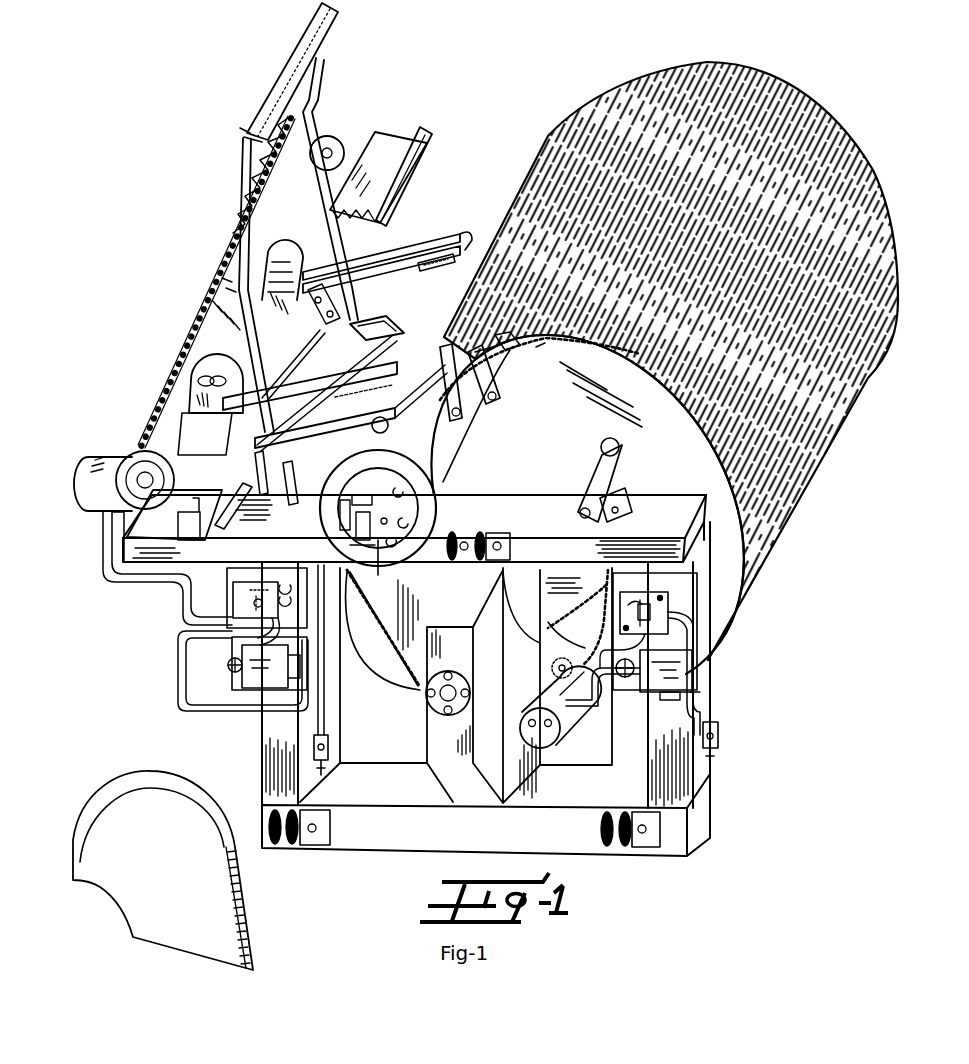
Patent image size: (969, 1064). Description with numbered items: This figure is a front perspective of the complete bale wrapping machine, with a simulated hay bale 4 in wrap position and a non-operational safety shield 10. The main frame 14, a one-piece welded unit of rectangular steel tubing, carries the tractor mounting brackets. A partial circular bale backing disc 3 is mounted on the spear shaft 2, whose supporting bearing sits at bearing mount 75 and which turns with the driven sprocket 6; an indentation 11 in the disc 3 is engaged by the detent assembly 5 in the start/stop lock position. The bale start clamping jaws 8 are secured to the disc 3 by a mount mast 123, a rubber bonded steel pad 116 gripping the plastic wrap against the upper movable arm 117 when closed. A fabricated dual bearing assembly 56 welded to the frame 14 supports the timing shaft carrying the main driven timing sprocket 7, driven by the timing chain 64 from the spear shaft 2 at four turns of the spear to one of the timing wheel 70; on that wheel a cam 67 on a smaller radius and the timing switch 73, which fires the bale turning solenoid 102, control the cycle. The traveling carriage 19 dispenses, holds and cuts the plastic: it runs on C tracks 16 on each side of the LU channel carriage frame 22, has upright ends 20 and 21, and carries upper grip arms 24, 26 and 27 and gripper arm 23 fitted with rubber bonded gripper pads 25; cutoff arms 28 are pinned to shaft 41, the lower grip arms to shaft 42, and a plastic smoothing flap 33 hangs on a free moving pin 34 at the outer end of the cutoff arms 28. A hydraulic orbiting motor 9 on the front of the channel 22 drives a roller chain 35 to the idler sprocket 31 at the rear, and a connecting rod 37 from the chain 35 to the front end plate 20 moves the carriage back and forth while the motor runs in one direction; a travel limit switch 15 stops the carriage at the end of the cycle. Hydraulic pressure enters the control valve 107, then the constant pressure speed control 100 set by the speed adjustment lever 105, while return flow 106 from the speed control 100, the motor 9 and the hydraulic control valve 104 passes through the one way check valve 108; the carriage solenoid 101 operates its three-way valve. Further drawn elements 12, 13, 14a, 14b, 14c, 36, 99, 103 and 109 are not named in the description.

The spear shaft 2 is at (425, 700).
The bale backing plate disc 3 is at (140, 456).
The hay bale 4 is at (815, 479).
The detent assembly 5 is at (688, 444).
The driven sprocket 6 is at (562, 635).
The main driven timing sprocket 7 is at (502, 335).
The bale start clamping jaws 8 is at (321, 456).
The hydraulic orbiting motor 9 is at (107, 452).
The safety shield 10 is at (160, 812).
The indentation 11 is at (662, 445).
The support post 12 is at (302, 483).
The hydraulic motor 13 is at (548, 735).
The main frame 14 is at (728, 774).
The frame chain member 14a is at (560, 661).
The frame roller 14b is at (314, 836).
The frame roller 14c is at (650, 840).
The travel limit switch 15 is at (186, 512).
The C track 16 is at (421, 160).
The traveling carriage 19 is at (200, 470).
The front carriage end plate 20 is at (182, 416).
The upright end 21 is at (316, 342).
The carriage assembly frame 22 is at (393, 150).
The gripper arm 23 is at (351, 406).
The upper plastic film grip arm 24 is at (368, 395).
The gripper pads 25 is at (438, 272).
The upper plastic film grip arm 26 is at (395, 277).
The upper plastic film grip arm 27 is at (400, 256).
The cutoff arms 28 is at (317, 87).
The idler roller chain sprocket 31 is at (334, 146).
The plastic smoothing flap 33 is at (306, 44).
The free moving pin 34 is at (247, 140).
The roller chain 35 is at (226, 286).
The drum 36 is at (233, 350).
The connecting rod 37 is at (172, 441).
The shaft 41 is at (337, 305).
The shaft 42 is at (305, 352).
The dual bearing assembly 56 is at (510, 322).
The timing chain 64 is at (412, 688).
The cam 67 is at (381, 631).
The timing wheel 70 is at (543, 352).
The timing switch 73 is at (300, 525).
The bearing mount 75 is at (436, 708).
The control valve 99 is at (233, 603).
The constant pressure speed control 100 is at (668, 615).
The solenoid 101 is at (232, 668).
The solenoid 102 is at (634, 696).
The valve knob 103 is at (232, 655).
The hydraulic control valve 104 is at (694, 663).
The speed adjustment lever 105 is at (672, 602).
The return flow line 106 is at (700, 678).
The control valve 107 is at (245, 690).
The one way check valve 108 is at (730, 744).
The pedal 109 is at (302, 744).
The rubber bonded steel pad 116 is at (377, 321).
The upper movable arm 117 is at (426, 350).
The mount mast 123 is at (490, 361).